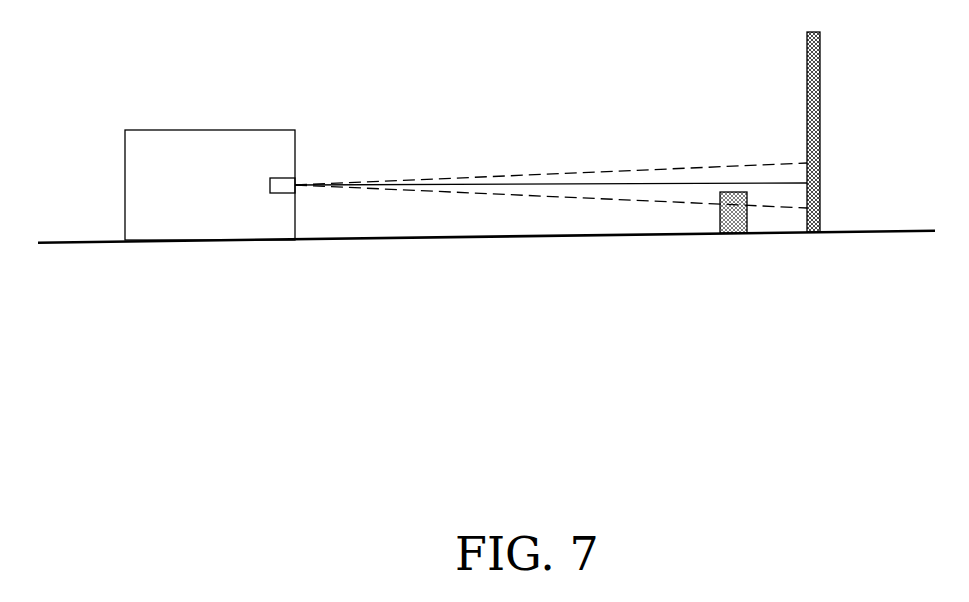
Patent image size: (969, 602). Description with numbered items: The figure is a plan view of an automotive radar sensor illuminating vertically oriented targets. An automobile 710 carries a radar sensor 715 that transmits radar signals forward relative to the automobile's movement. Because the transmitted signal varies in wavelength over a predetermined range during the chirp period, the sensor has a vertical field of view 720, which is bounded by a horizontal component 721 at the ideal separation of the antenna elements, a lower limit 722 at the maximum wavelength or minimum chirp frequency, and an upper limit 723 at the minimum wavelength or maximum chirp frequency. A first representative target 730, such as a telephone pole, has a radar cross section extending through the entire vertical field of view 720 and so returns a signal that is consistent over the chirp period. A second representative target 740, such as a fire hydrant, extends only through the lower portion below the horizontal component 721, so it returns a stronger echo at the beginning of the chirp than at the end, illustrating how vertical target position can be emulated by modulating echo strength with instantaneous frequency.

The automobile 710 is at (202, 148).
The radar sensor 715 is at (322, 151).
The vertical field of view 720 is at (739, 75).
The horizontal component 721 is at (551, 149).
The lower limit 722 is at (551, 240).
The upper limit 723 is at (551, 141).
The first representative target 730 is at (844, 163).
The second representative target 740 is at (761, 243).